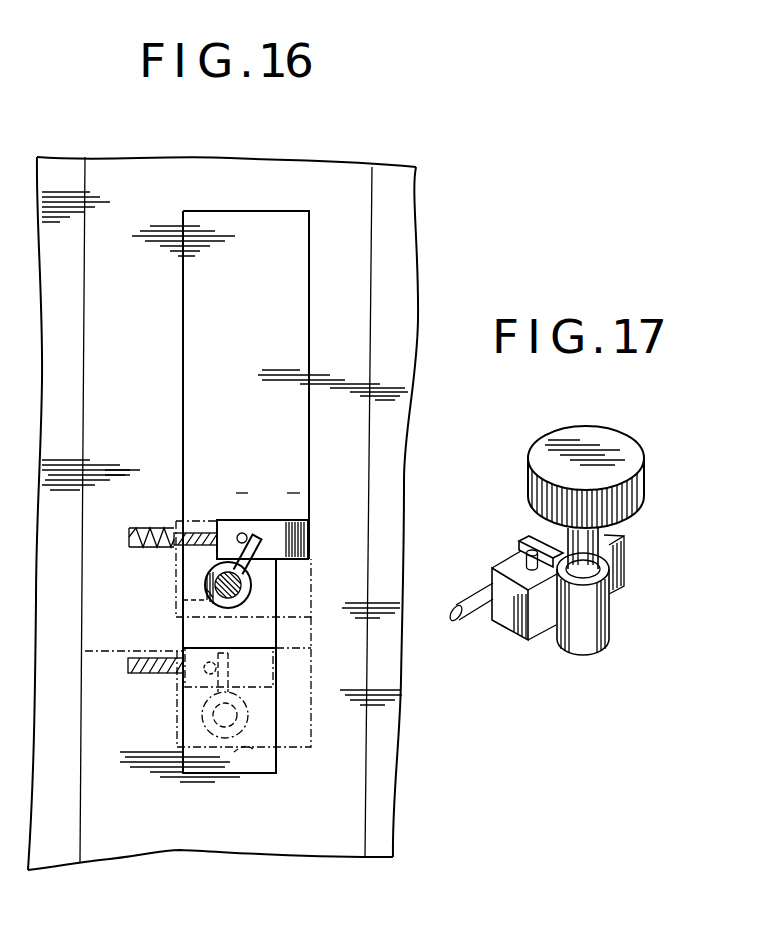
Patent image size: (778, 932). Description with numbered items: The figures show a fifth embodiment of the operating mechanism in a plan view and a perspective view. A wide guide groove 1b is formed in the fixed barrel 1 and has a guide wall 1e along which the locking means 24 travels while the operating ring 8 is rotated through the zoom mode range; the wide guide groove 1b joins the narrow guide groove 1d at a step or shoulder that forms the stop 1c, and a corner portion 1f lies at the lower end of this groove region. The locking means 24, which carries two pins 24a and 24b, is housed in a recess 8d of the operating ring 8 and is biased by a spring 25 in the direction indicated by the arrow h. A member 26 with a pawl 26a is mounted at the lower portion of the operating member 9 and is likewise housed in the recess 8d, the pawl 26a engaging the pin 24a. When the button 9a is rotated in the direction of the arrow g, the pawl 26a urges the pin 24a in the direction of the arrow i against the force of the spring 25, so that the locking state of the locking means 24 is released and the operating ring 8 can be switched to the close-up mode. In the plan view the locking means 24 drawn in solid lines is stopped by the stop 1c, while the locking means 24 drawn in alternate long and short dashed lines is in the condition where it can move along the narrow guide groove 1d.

In FIG. 16, the fixed barrel 1 is at (110, 178).
In FIG. 16, the guide groove 1b is at (275, 235).
In FIG. 16, the stop 1c is at (302, 560).
In FIG. 16, the narrow guide groove 1d is at (220, 770).
In FIG. 16, the guide wall 1e is at (309, 322).
In FIG. 16, the corner portion 1f is at (274, 768).
In FIG. 16, the operating ring 8 is at (373, 262).
In FIG. 16, the recess 8d is at (197, 603).
In FIG. 16, the operating member 9 is at (232, 608).
In FIG. 17, the operating member 9 is at (598, 565).
In FIG. 17, the button 9a is at (606, 450).
In FIG. 16, the locking means 24 is at (280, 543).
In FIG. 17, the locking means 24 is at (512, 622).
In FIG. 16, the pin 24a is at (238, 534).
In FIG. 17, the pin 24a is at (522, 560).
In FIG. 16, the pin 24b is at (182, 521).
In FIG. 17, the pin 24b is at (466, 600).
In FIG. 16, the spring 25 is at (129, 536).
In FIG. 16, the member 26 is at (250, 592).
In FIG. 17, the member 26 is at (580, 640).
In FIG. 16, the pawl 26a is at (272, 558).
In FIG. 17, the pawl 26a is at (521, 537).
In FIG. 16, the arrow g is at (205, 588).
In FIG. 16, the arrow h is at (287, 493).
In FIG. 16, the arrow i is at (248, 493).